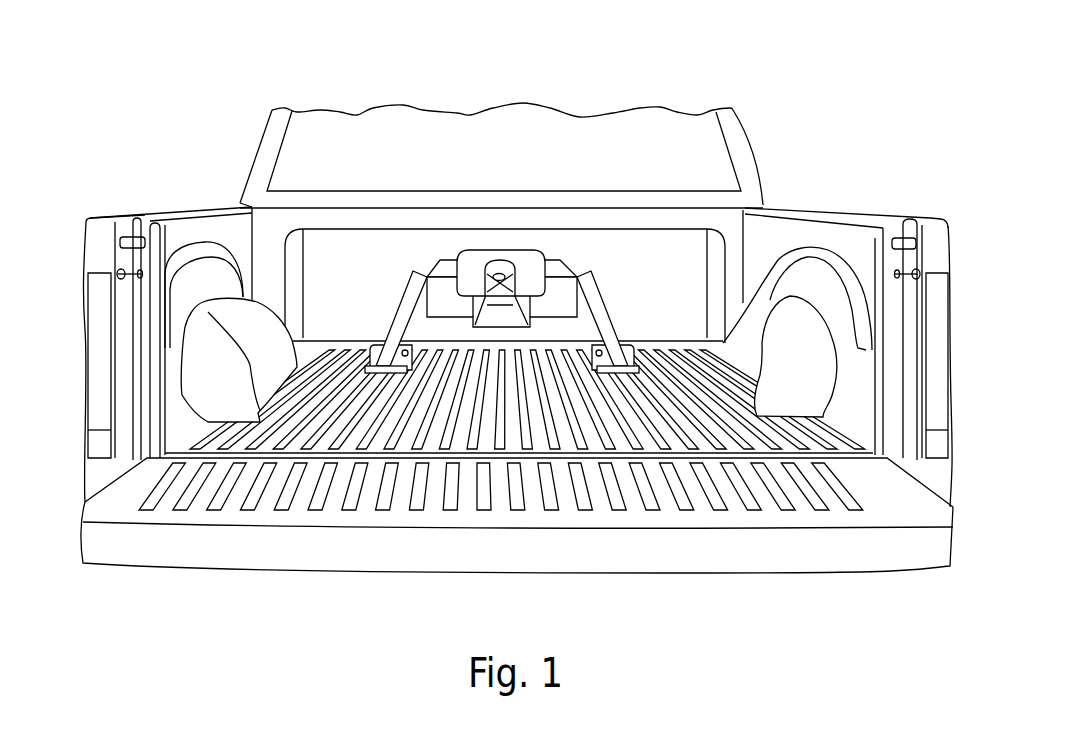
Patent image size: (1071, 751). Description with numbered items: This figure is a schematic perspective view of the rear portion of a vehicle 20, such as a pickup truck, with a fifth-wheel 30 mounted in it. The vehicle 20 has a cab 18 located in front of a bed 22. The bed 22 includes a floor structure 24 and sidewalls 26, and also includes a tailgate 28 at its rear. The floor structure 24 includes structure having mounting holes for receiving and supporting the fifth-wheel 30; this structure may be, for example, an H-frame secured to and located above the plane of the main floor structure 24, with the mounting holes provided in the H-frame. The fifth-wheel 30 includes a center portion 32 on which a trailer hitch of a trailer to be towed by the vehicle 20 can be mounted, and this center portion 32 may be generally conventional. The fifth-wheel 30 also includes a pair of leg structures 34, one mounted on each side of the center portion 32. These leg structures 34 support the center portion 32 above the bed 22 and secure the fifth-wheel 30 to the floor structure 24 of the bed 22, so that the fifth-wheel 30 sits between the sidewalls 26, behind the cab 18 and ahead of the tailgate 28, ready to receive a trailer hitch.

The cab 18 is at (265, 128).
The vehicle 20 is at (815, 49).
The bed 22 is at (223, 203).
The floor structure 24 is at (190, 433).
The sidewalls 26 is at (823, 207).
The tailgate 28 is at (850, 570).
The fifth-wheel 30 is at (536, 238).
The center portion 32 is at (492, 252).
The leg structures 34 is at (405, 320).